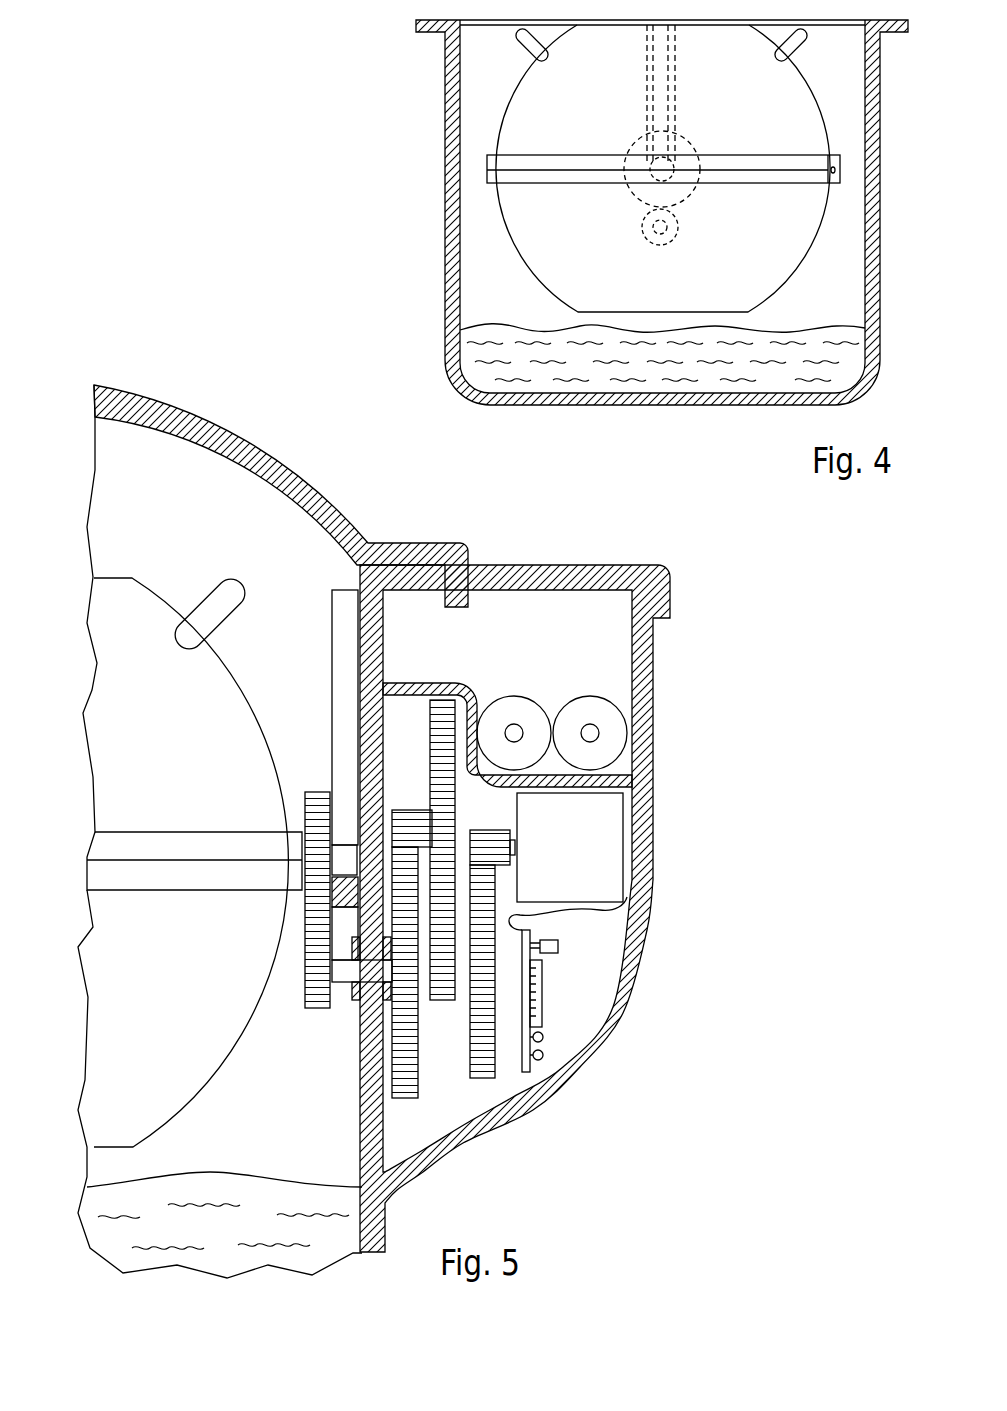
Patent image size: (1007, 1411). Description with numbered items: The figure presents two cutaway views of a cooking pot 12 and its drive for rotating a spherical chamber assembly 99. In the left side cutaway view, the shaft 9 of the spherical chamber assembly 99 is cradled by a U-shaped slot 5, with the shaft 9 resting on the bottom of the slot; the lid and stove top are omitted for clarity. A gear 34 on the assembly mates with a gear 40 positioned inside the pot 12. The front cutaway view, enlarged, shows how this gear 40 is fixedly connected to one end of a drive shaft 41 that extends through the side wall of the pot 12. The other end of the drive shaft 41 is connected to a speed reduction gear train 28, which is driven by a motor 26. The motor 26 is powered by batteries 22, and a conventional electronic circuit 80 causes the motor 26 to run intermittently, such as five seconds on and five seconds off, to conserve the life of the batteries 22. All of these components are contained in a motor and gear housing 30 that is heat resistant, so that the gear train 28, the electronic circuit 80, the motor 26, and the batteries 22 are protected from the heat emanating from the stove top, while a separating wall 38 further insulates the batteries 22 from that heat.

In FIG. 4, the U-shaped slot 5 is at (667, 72).
In FIG. 5, the U-shaped slot 5 is at (340, 690).
In FIG. 4, the shaft 9 is at (667, 180).
In FIG. 5, the shaft 9 is at (345, 850).
In FIG. 4, the pot 12 is at (445, 228).
In FIG. 5, the batteries 22 is at (537, 696).
In FIG. 5, the motor 26 is at (613, 843).
In FIG. 5, the speed reduction gear train 28 is at (459, 1014).
In FIG. 5, the motor and gear housing 30 is at (641, 961).
In FIG. 4, the gear 34 is at (635, 198).
In FIG. 5, the gear 34 is at (310, 820).
In FIG. 5, the separating wall 38 is at (410, 682).
In FIG. 4, the gear 40 is at (655, 246).
In FIG. 5, the gear 40 is at (310, 1010).
In FIG. 5, the drive shaft 41 is at (340, 985).
In FIG. 5, the electronic circuit 80 is at (542, 988).
In FIG. 4, the spherical chamber assembly 99 is at (822, 274).